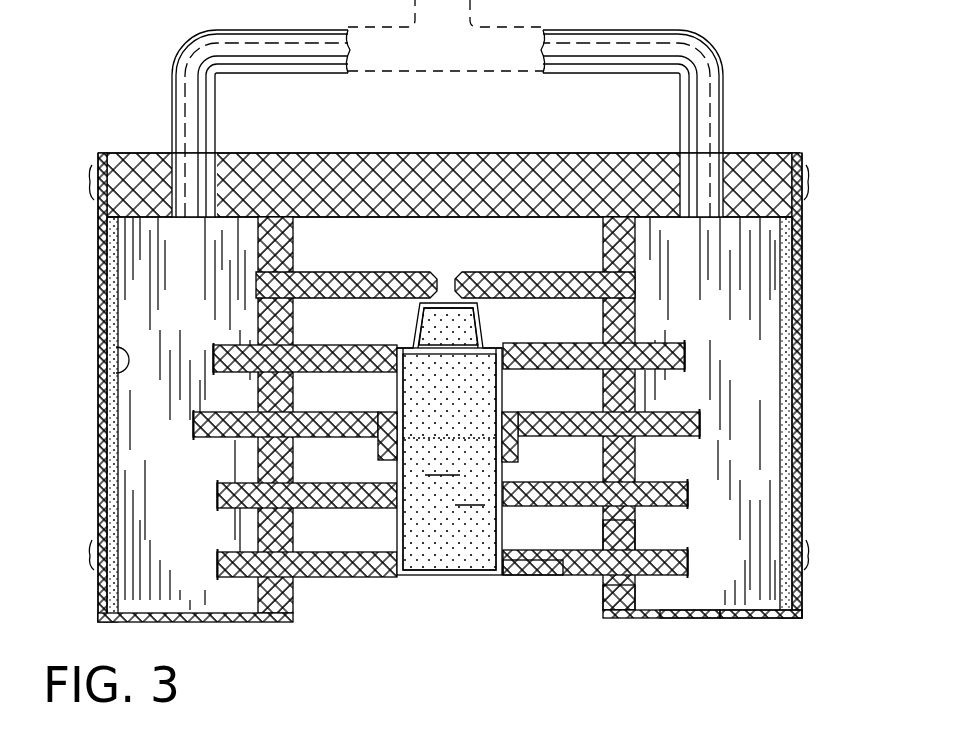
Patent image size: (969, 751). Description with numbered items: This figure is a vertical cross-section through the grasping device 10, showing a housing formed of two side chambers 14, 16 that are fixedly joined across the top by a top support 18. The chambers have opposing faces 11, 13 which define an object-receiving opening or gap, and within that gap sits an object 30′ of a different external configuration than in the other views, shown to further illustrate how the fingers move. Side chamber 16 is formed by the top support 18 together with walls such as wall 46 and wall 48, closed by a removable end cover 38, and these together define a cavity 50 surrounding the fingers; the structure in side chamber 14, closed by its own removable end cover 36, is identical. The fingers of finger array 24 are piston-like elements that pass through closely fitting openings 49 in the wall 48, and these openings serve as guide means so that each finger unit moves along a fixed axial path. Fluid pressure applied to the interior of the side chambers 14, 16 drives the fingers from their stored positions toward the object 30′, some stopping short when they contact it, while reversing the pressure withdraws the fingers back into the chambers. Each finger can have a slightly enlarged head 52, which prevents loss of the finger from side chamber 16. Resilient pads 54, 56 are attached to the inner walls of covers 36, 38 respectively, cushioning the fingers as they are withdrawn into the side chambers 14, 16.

The device 10 is at (118, 93).
The top support 18 is at (427, 153).
The end cover 36 is at (98, 478).
The end cover 38 is at (797, 343).
The side chamber 14 is at (98, 504).
The resilient pad 54 is at (115, 384).
The resilient pad 56 is at (780, 345).
The cavity 50 is at (753, 310).
The opposing face 13 is at (295, 608).
The side chamber 16 is at (761, 623).
The opposing face 11 is at (596, 590).
The opening 49 is at (606, 540).
The wall 48 is at (633, 590).
The wall 46 is at (663, 612).
The enlarged head 52 is at (693, 563).
The finger array 24 is at (533, 578).
The object 30′ is at (467, 578).